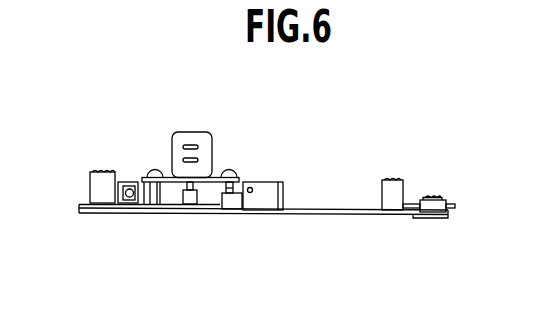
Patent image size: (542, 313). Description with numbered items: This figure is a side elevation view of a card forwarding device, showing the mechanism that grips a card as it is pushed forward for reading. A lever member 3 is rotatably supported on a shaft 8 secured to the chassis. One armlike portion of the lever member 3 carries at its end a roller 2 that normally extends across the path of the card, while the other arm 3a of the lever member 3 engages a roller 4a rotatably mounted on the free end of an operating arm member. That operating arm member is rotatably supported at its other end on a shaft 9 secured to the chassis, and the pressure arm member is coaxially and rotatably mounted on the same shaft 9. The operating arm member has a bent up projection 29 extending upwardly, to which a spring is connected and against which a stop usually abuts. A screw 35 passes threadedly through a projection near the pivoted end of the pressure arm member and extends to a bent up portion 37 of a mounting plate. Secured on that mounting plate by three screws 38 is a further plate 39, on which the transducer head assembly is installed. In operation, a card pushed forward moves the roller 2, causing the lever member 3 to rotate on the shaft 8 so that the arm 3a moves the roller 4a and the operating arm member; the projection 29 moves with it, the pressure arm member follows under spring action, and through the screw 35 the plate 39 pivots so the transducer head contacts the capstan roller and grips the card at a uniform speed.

The roller 2 is at (233, 197).
The lever member 3 is at (323, 210).
The arm of lever member 3a is at (453, 202).
The roller 4a is at (432, 197).
The shaft 8 is at (393, 178).
The shaft 9 is at (102, 172).
The bent up projection 29 is at (270, 193).
The screw 35 is at (110, 205).
The bent up portion 37 is at (122, 187).
The screws 38 is at (152, 172).
The plate 39 is at (215, 178).